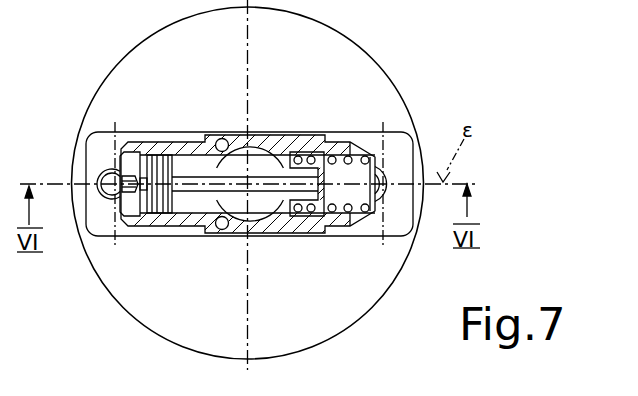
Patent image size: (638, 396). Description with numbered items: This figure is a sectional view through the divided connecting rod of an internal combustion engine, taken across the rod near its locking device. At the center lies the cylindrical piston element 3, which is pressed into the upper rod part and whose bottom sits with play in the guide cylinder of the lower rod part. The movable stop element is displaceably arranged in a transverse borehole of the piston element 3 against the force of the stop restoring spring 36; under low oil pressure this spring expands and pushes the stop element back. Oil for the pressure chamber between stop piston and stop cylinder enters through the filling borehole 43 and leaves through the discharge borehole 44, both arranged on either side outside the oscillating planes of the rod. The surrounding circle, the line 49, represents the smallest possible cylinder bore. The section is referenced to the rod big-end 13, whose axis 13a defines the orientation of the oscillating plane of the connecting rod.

The piston element 3 is at (258, 205).
The rod big-end 13 is at (249, 124).
The axis of the rod big-end 13a is at (250, 308).
The stop restoring spring 36 is at (349, 144).
The filling borehole 43 is at (223, 138).
The discharge borehole 44 is at (223, 230).
The line representing smallest possible cylinder bore 49 is at (133, 315).